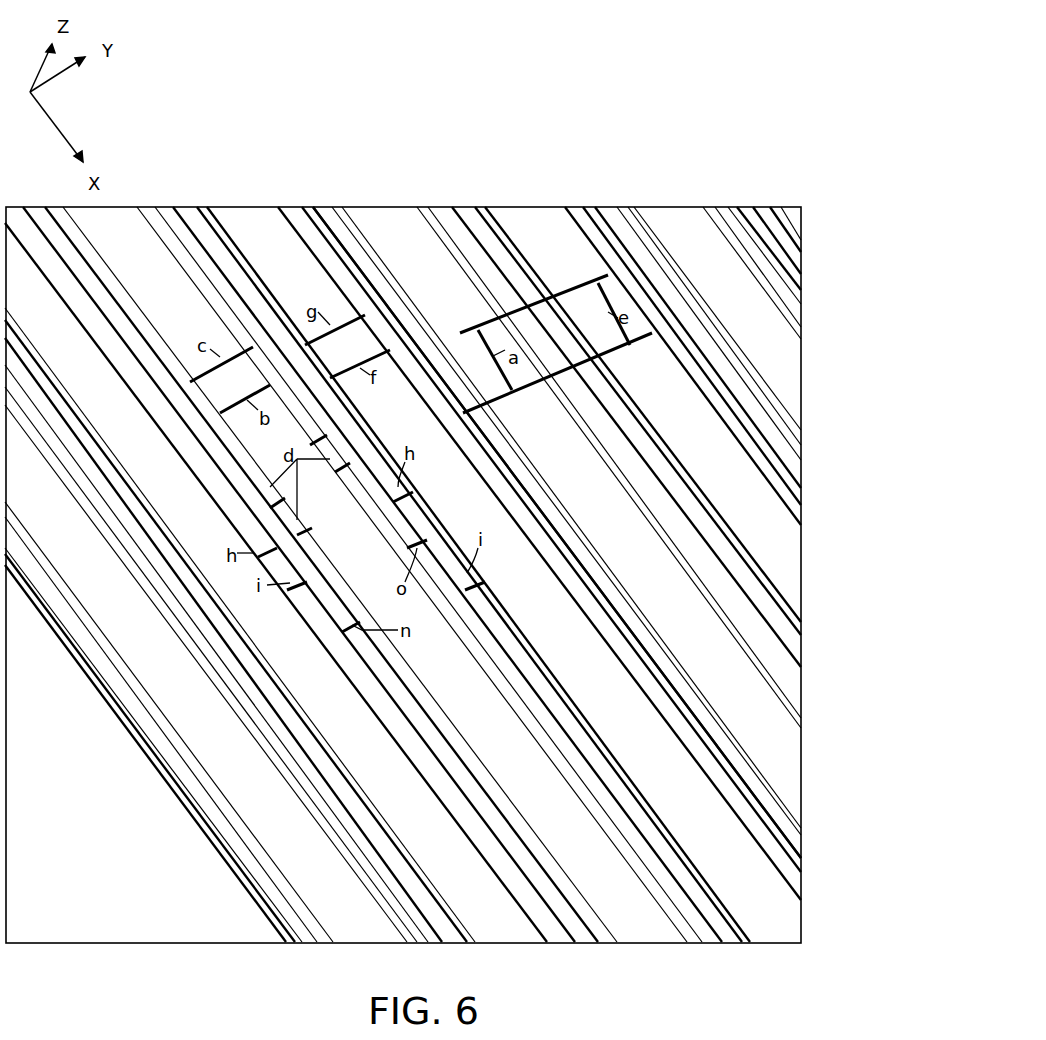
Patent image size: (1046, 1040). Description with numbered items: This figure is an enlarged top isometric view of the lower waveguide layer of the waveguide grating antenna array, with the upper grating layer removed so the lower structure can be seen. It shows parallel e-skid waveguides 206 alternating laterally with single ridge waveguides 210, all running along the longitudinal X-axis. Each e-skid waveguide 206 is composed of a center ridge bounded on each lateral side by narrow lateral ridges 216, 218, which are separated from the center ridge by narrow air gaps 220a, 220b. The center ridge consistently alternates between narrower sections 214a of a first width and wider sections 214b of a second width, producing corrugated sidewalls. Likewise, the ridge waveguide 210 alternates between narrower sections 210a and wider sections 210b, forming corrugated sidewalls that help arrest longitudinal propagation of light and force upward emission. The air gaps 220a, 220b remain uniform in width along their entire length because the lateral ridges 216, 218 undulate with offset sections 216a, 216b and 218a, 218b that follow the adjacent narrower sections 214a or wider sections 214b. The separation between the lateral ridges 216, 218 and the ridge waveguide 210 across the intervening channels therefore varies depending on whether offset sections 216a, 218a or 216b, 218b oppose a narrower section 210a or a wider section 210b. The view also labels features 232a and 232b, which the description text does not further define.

The first conductive line 232a is at (568, 208).
The second conductive line 232b is at (797, 274).
The narrower sections 210a is at (745, 455).
The wider sections 210b is at (760, 485).
The ridge waveguide 210 is at (790, 560).
The lateral ridge 218 is at (765, 628).
The air gap 220b is at (758, 646).
The wider sections 214b is at (737, 684).
The narrower sections 214a is at (760, 713).
The e-skid waveguide 206 is at (780, 743).
The air gap 220a is at (785, 793).
The lateral ridge 216 is at (787, 837).
The offset section 218a is at (513, 673).
The offset section 218b is at (535, 700).
The offset section 216a is at (665, 680).
The offset section 216b is at (700, 705).